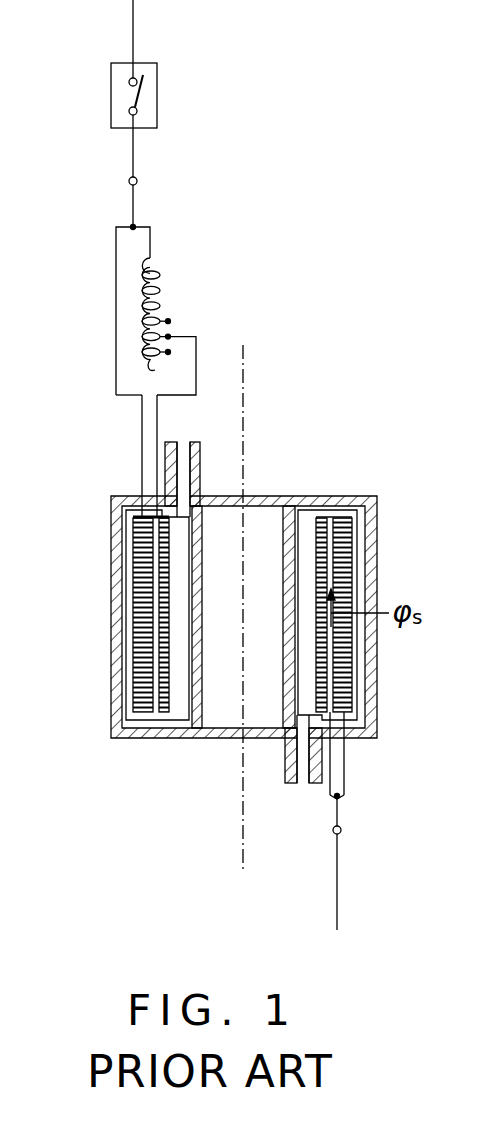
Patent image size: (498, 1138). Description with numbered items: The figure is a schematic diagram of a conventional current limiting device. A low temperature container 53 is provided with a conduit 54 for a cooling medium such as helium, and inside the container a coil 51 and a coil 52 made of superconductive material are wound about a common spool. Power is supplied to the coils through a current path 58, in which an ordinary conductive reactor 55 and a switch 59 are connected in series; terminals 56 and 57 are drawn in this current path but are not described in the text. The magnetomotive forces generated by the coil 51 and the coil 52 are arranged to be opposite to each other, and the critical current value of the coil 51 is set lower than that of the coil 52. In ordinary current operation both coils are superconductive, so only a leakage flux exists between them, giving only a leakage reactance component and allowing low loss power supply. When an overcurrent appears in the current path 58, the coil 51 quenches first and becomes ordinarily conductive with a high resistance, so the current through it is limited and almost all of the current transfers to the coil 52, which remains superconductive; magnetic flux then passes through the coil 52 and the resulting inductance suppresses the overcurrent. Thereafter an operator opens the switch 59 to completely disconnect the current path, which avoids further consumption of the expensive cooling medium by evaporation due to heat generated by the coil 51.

The coil 51 is at (164, 655).
The coil 52 is at (140, 600).
The low temperature container 53 is at (112, 548).
The conduit 54 is at (181, 452).
The ordinary conductive reactor 55 is at (158, 291).
The terminal 56 is at (341, 829).
The terminal 57 is at (137, 181).
The current path 58 is at (135, 14).
The switch 59 is at (146, 90).